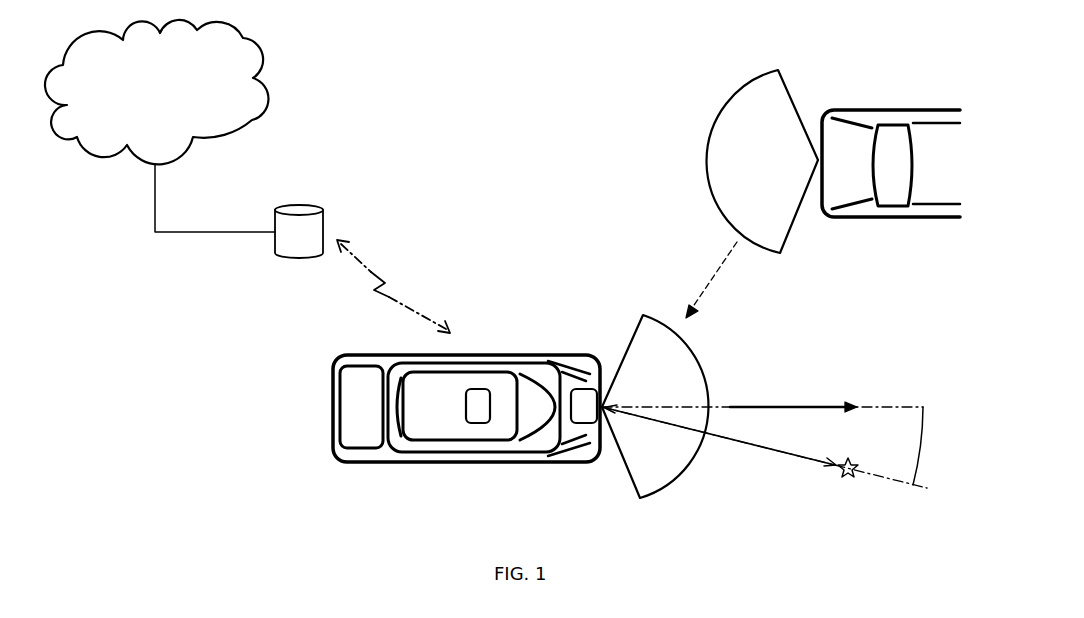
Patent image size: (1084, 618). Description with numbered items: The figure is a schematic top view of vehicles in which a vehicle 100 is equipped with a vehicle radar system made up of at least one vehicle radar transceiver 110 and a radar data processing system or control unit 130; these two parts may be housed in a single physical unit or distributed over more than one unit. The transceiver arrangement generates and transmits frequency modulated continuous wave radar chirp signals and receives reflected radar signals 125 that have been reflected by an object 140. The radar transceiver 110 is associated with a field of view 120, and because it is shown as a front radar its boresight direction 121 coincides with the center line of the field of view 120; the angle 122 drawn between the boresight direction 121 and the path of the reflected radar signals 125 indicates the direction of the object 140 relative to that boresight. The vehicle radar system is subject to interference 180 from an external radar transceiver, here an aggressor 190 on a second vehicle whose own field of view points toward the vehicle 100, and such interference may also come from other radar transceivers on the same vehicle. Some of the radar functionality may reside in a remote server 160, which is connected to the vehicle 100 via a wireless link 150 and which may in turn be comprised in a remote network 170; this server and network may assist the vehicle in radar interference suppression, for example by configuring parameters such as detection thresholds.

The vehicle 100 is at (333, 400).
The vehicle radar transceiver 110 is at (576, 424).
The field of view 120 is at (668, 370).
The boresight direction 121 is at (827, 407).
The angle to target 122 is at (937, 446).
The reflected radar signals 125 is at (735, 443).
The control unit 130 is at (466, 410).
The object 140 is at (840, 459).
The wireless link 150 is at (397, 286).
The remote server 160 is at (325, 210).
The remote network 170 is at (262, 50).
The interference 180 is at (752, 194).
The aggressor 190 is at (891, 163).